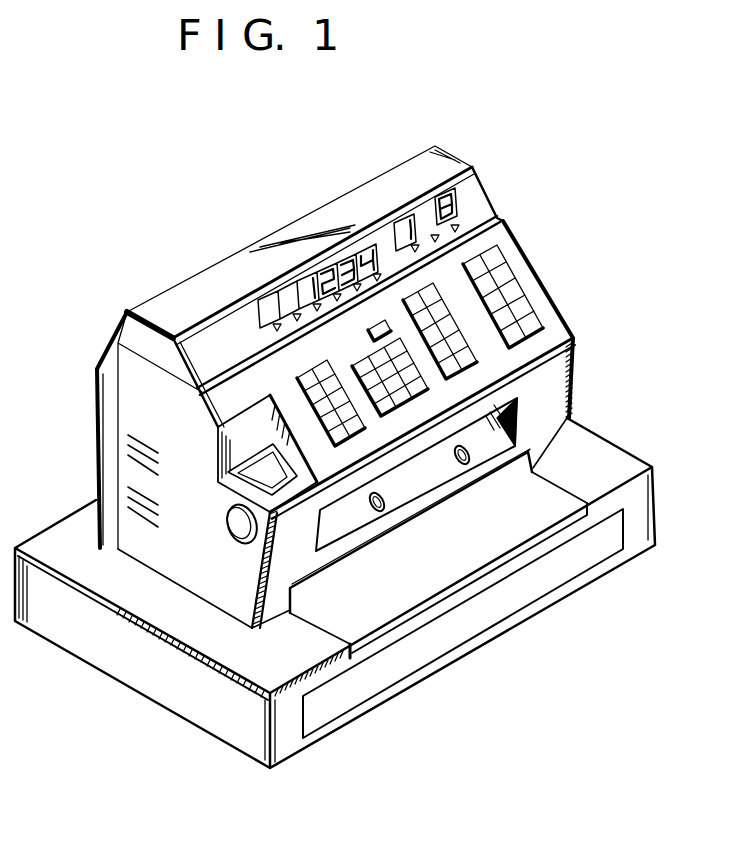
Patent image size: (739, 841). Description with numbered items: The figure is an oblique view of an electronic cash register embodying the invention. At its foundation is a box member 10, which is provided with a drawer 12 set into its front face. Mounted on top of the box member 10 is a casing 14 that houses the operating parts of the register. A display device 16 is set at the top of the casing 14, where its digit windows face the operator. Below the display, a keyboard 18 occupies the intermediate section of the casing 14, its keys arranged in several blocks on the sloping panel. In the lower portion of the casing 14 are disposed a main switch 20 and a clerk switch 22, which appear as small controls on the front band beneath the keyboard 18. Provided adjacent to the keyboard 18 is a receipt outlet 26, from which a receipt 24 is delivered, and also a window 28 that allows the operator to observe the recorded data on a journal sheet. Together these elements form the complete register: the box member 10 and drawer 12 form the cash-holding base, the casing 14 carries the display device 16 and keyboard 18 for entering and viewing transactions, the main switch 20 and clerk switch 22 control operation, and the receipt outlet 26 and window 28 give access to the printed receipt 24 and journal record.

The box member 10 is at (607, 433).
The drawer 12 is at (600, 553).
The casing 14 is at (95, 427).
The display device 16 is at (484, 200).
The keyboard 18 is at (520, 264).
The main switch 20 is at (374, 505).
The clerk switch 22 is at (460, 458).
The receipt 24 is at (276, 454).
The receipt outlet 26 is at (233, 474).
The window 28 is at (274, 488).